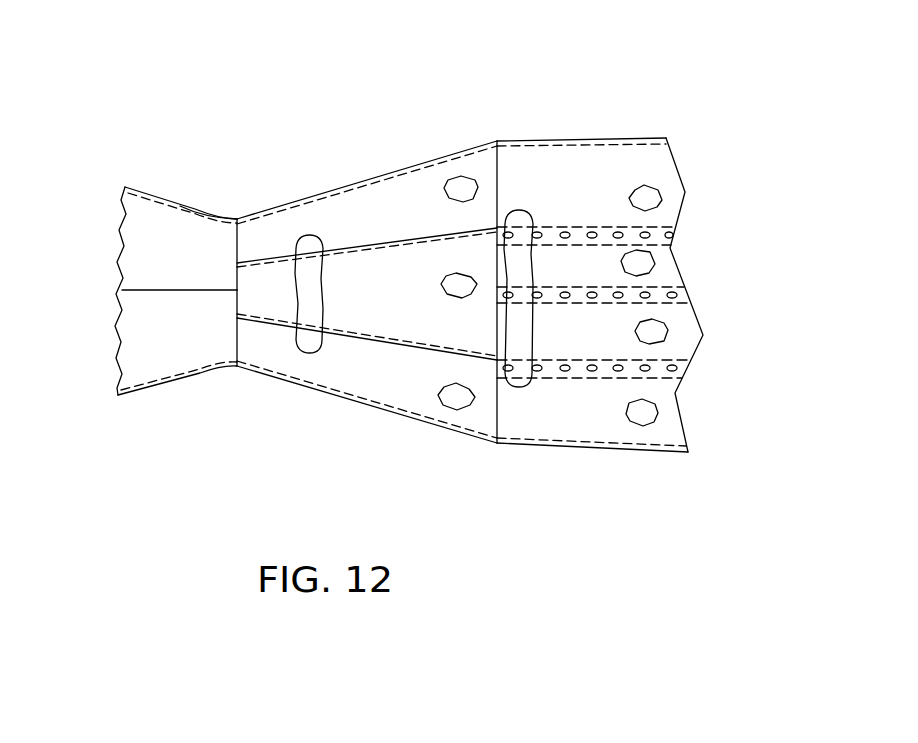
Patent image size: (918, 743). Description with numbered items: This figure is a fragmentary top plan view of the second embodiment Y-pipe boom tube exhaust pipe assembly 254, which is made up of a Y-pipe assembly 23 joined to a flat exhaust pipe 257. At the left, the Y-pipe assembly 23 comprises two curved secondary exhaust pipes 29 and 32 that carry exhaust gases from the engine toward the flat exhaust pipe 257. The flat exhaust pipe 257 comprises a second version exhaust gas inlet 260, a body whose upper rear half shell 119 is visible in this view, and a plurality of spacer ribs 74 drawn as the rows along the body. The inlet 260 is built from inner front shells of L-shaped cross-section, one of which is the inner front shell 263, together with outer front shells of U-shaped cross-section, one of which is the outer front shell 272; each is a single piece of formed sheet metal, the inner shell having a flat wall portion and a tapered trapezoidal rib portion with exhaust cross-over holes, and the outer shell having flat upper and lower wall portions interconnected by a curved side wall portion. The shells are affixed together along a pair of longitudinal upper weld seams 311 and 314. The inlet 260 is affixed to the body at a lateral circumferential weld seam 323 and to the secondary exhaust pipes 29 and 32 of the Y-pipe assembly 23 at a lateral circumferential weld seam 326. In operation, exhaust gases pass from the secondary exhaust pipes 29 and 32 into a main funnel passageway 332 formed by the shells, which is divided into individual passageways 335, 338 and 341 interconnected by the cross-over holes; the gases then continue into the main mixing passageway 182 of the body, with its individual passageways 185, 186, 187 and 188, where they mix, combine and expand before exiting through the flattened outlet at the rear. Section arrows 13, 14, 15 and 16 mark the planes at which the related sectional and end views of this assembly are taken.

The section line 13- 13 is at (112, 509).
The section line 14- 14 is at (113, 53).
The section line 15- 15 is at (483, 32).
The section line 16- 16 is at (250, 85).
The Y-pipe assembly 23 is at (153, 183).
The curved secondary exhaust pipe 29 is at (190, 200).
The curved secondary exhaust pipe 32 is at (192, 376).
The spacer ribs 74 is at (612, 298).
The upper rear half shell 119 is at (658, 167).
The main mixing passageway 182 is at (517, 323).
The individual passageway 185 is at (658, 198).
The individual passageway 186 is at (653, 263).
The individual passageway 187 is at (666, 335).
The individual passageway 188 is at (654, 413).
The Y-pipe boom tube exhaust pipe assembly 254 is at (643, 66).
The flat exhaust pipe 257 is at (564, 114).
The exhaust gas inlet 260 is at (335, 186).
The inner front shell 263 is at (262, 297).
The outer front shell 272 is at (347, 403).
The longitudinal upper weld seam 311 is at (393, 240).
The longitudinal upper weld seam 314 is at (413, 349).
The lateral circumferential weld seam 323 is at (497, 183).
The lateral circumferential weld seam 326 is at (237, 243).
The main funnel passageway 332 is at (313, 315).
The individual passageway 335 is at (463, 182).
The individual passageway 338 is at (446, 283).
The individual passageway 341 is at (450, 398).